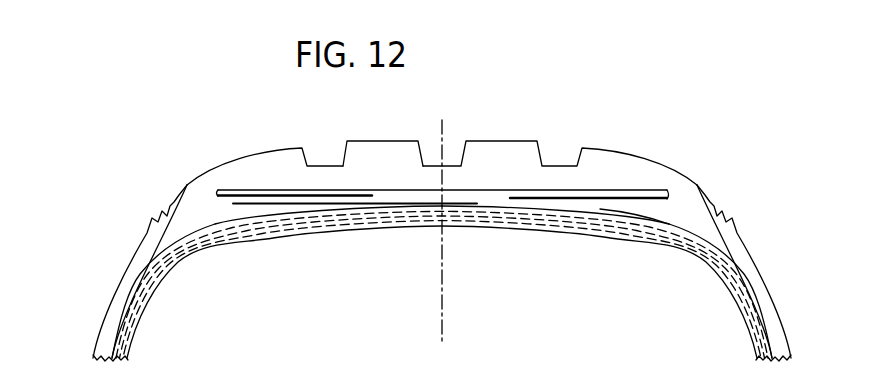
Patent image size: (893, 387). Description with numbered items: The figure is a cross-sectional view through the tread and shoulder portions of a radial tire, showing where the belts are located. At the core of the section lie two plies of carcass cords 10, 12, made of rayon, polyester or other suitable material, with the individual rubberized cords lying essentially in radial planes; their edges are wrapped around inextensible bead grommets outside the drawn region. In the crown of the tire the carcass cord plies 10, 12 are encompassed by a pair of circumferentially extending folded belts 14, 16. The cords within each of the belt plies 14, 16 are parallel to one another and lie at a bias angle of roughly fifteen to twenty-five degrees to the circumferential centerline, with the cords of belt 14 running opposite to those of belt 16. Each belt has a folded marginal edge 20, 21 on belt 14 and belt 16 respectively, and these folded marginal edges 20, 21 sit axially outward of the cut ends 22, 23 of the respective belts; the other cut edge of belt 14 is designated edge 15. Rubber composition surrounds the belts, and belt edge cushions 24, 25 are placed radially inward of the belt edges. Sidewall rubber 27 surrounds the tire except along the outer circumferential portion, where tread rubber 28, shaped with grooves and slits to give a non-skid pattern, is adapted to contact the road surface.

The carcass cord ply 10 is at (737, 280).
The carcass cord ply 12 is at (697, 257).
The folded belt 14 is at (478, 188).
The cut edge of belt 15 is at (377, 203).
The folded belt 16 is at (565, 218).
The folded marginal edge 20 is at (219, 194).
The folded marginal edge 21 is at (673, 178).
The cut end 22 is at (230, 205).
The cut end 23 is at (668, 195).
The belt edge cushion 24 is at (203, 235).
The belt edge cushion 25 is at (662, 228).
The sidewall rubber 27 is at (105, 332).
The tread rubber 28 is at (381, 158).